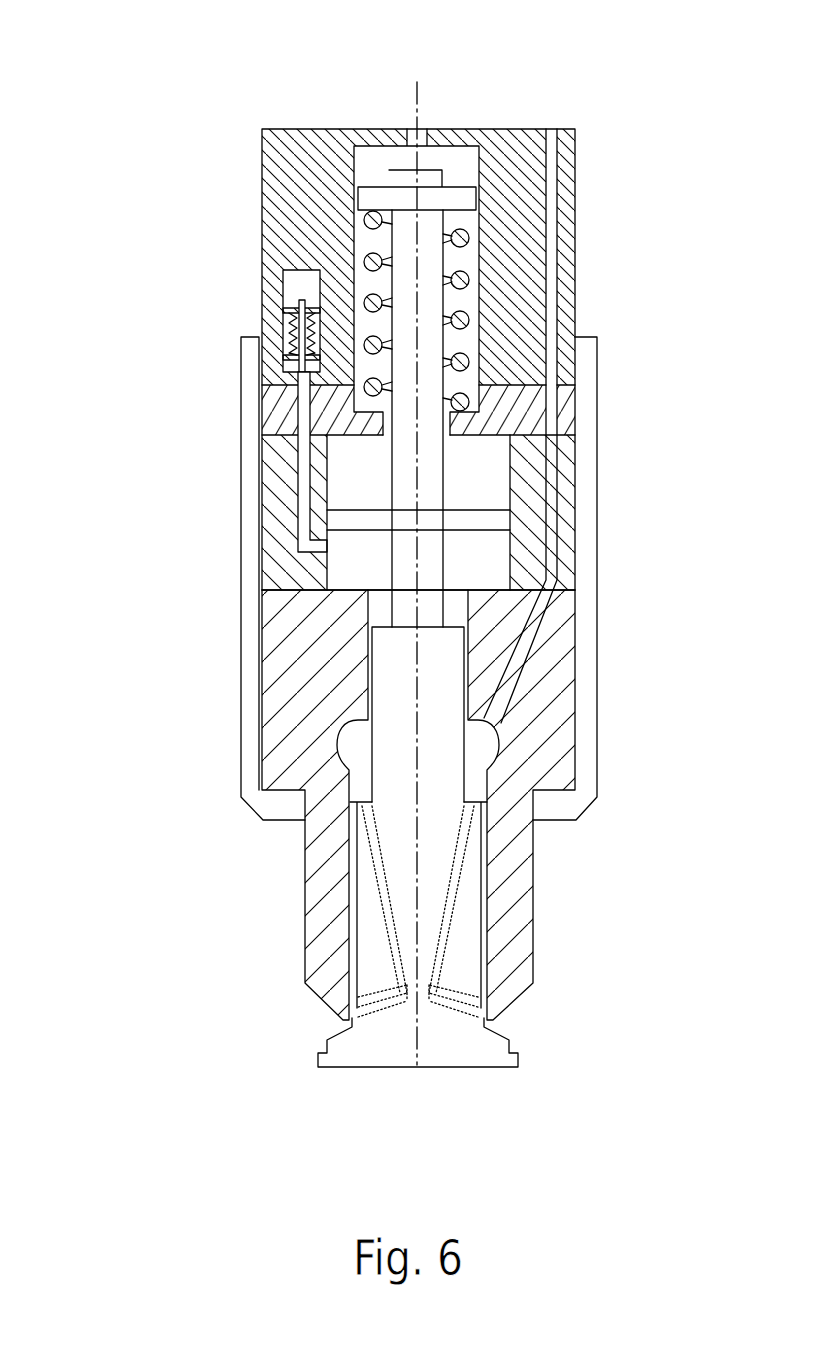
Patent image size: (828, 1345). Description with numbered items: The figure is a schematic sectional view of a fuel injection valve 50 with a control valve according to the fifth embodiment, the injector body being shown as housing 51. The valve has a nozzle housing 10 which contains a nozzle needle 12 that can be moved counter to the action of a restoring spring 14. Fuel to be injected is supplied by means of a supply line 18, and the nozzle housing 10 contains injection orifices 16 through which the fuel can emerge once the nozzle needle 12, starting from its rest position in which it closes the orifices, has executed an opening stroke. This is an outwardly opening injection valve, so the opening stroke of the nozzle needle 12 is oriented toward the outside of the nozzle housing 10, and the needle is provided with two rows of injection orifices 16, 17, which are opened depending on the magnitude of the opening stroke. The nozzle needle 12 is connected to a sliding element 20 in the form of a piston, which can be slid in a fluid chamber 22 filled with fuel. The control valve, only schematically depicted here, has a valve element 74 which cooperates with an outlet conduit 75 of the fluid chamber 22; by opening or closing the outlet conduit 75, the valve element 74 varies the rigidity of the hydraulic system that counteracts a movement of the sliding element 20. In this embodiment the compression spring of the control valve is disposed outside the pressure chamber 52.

The nozzle housing 10 is at (332, 888).
The nozzle needle 12 is at (438, 908).
The restoring spring 14 is at (460, 278).
The injection orifices 16 is at (385, 1007).
The injection orifices 17 is at (462, 985).
The supply line 18 is at (552, 129).
The sliding element 20 is at (490, 520).
The fluid chamber 22 is at (484, 565).
The fuel injector 50 is at (186, 390).
The injector housing 51 is at (296, 196).
The pressure chamber 52 is at (296, 284).
The valve element 74 is at (295, 368).
The outlet conduit 75 is at (305, 515).